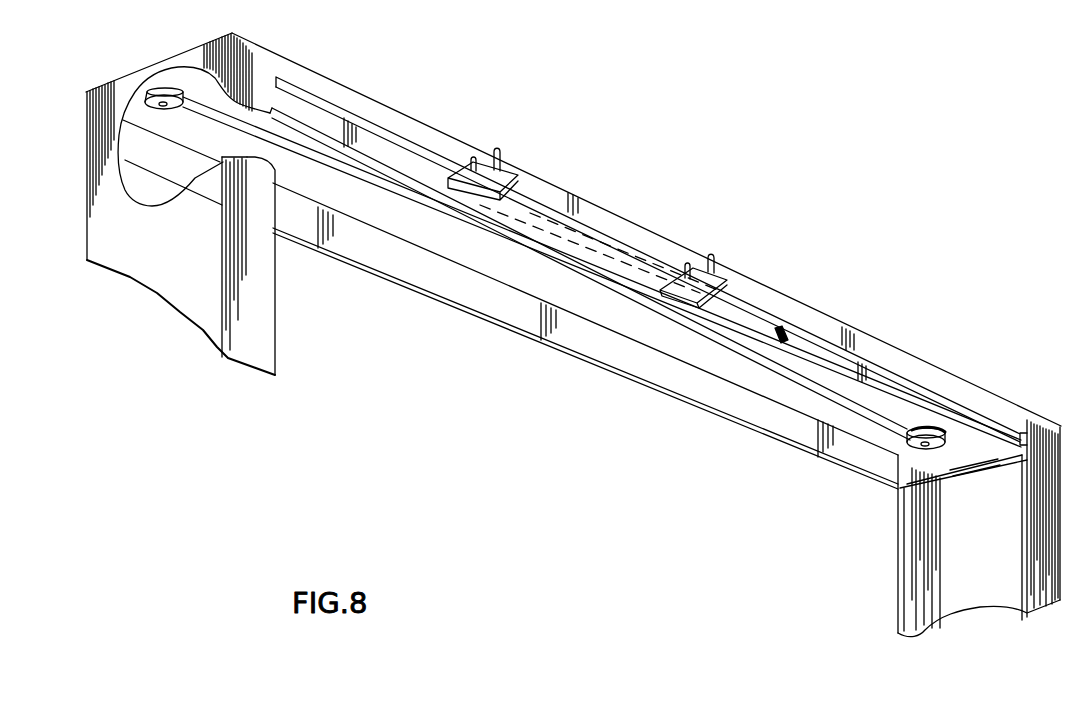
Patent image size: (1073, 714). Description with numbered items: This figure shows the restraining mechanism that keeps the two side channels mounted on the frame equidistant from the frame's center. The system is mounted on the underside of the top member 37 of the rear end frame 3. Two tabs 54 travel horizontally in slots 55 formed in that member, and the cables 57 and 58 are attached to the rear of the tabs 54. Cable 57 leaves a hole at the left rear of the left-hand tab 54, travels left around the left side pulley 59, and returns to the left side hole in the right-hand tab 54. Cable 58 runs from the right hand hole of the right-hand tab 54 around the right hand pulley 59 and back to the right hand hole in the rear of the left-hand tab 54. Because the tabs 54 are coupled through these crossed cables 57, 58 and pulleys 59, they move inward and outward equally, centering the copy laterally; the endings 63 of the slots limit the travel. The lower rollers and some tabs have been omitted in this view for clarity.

The rear end frame 3 is at (875, 340).
The top member 37 is at (313, 184).
The tab 54 is at (498, 166).
The slot 55 is at (393, 133).
The cable 57 is at (407, 200).
The cable 58 is at (680, 317).
The pulley 59 is at (146, 90).
The slot ending 63 is at (290, 82).